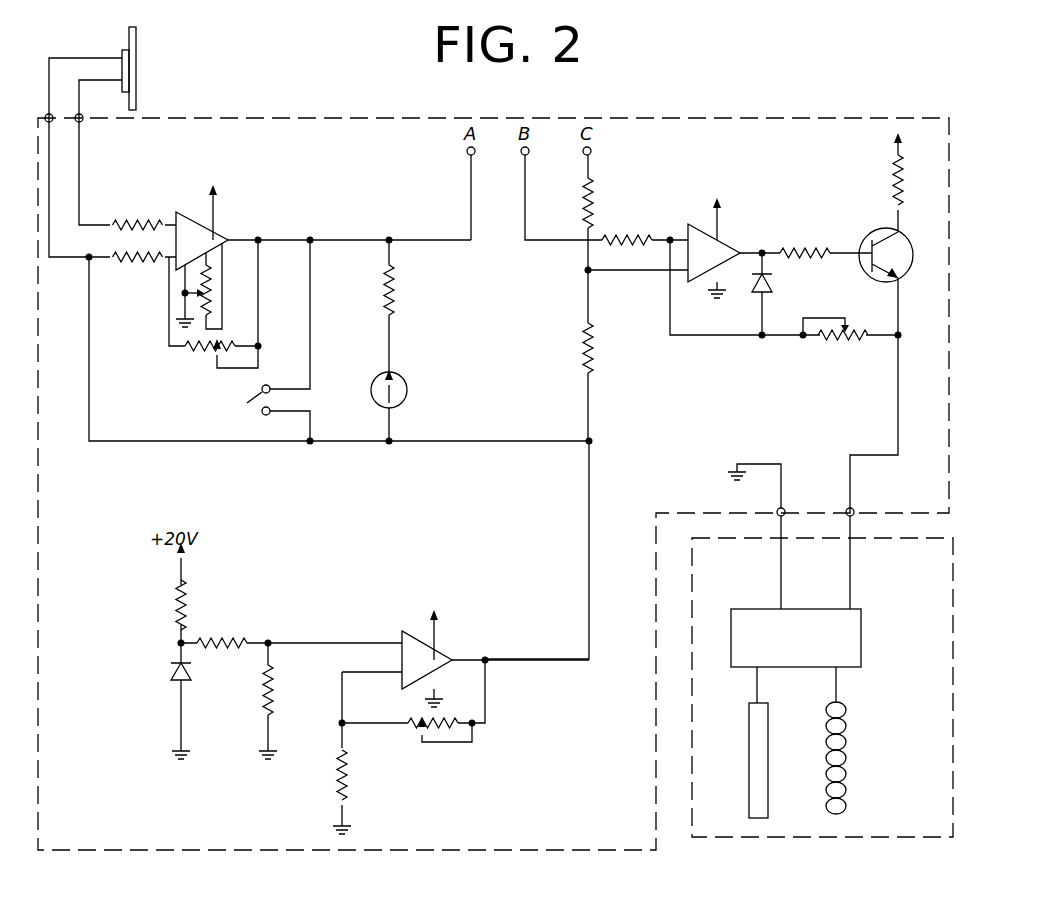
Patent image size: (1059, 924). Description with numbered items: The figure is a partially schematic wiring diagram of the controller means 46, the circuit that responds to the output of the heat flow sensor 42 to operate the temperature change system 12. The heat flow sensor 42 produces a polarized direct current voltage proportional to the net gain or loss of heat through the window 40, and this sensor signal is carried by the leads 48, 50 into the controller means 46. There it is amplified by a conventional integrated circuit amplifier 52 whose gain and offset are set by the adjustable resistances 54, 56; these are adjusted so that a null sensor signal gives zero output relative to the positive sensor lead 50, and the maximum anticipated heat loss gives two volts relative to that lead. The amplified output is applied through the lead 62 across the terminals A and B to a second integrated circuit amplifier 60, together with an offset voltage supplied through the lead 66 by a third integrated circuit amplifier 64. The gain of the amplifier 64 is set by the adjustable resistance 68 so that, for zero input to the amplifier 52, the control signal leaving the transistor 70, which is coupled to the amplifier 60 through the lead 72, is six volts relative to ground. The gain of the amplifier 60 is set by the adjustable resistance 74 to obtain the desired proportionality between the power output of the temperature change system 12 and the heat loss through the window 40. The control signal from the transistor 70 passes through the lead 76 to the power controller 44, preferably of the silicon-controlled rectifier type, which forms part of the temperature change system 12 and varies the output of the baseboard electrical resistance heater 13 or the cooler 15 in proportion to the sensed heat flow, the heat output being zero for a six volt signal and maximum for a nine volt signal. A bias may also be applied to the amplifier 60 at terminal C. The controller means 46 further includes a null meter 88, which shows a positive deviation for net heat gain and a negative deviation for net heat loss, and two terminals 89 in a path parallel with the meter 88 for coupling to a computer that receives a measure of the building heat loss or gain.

The temperature change system 12 is at (722, 538).
The baseboard electrical resistance heater 13 is at (847, 727).
The cooler 15 is at (768, 735).
The window 40 is at (134, 33).
The heat flow sensor 42 is at (118, 52).
The power controller 44 is at (862, 620).
The controller means 46 is at (288, 116).
The lead 48 is at (80, 168).
The positive sensor lead 50 is at (50, 143).
The integrated circuit amplifier 52 is at (196, 212).
The adjustable resistance 54 is at (203, 352).
The adjustable resistance 56 is at (208, 300).
The second integrated circuit amplifier 60 is at (692, 225).
The lead 62 is at (550, 243).
The third integrated circuit amplifier 64 is at (404, 633).
The lead 66 is at (589, 497).
The adjustable resistance 68 is at (418, 735).
The transistor 70 is at (884, 228).
The lead 72 is at (796, 246).
The adjustable resistance 74 is at (842, 342).
The lead 76 is at (896, 393).
The null meter 88 is at (407, 388).
The terminals 89 is at (263, 342).